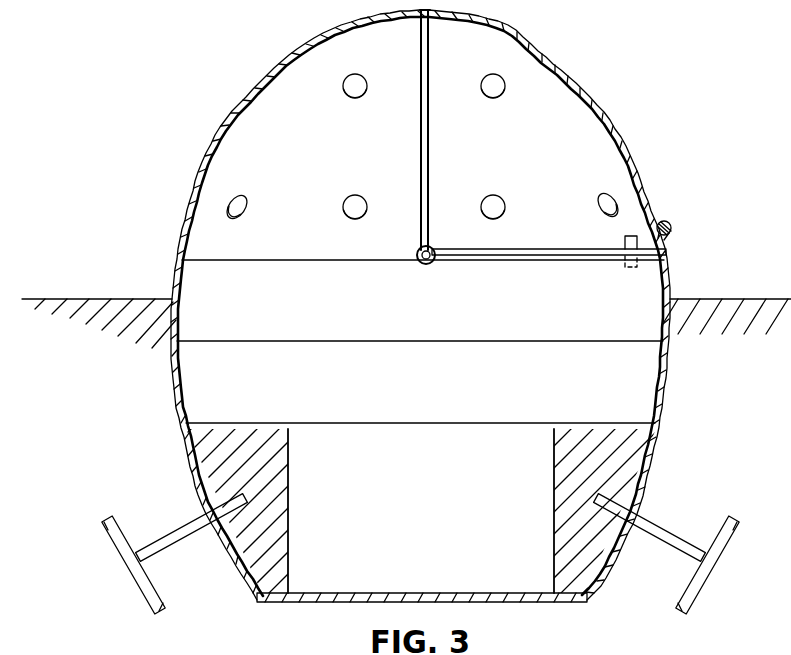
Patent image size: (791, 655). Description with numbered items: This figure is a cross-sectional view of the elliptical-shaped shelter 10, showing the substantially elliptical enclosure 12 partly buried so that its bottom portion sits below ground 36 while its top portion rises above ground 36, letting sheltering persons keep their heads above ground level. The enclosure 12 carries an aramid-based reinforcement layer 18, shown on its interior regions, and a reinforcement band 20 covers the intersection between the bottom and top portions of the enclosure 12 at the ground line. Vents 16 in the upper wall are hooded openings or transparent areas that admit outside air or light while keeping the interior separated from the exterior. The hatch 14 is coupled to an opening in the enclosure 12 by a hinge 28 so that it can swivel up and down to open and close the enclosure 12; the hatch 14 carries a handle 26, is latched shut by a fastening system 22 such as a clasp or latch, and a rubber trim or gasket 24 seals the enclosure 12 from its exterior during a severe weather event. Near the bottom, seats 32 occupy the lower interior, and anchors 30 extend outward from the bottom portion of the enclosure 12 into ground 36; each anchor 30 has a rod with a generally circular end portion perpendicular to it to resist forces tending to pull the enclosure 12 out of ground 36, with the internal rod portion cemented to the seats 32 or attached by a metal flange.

The elliptical-shaped shelter 10 is at (190, 97).
The enclosure 12 is at (186, 200).
The hatch 14 is at (617, 127).
The vents 16 is at (362, 100).
The aramid-based reinforcement layer 18 is at (333, 157).
The reinforcement band 20 is at (175, 262).
The fastening system 22 is at (634, 234).
The rubber trim or gasket 24 is at (419, 71).
The handle 26 is at (672, 227).
The hinges 28 is at (417, 254).
The anchors 30 is at (128, 578).
The seats 32 is at (289, 484).
The ground 36 is at (52, 298).